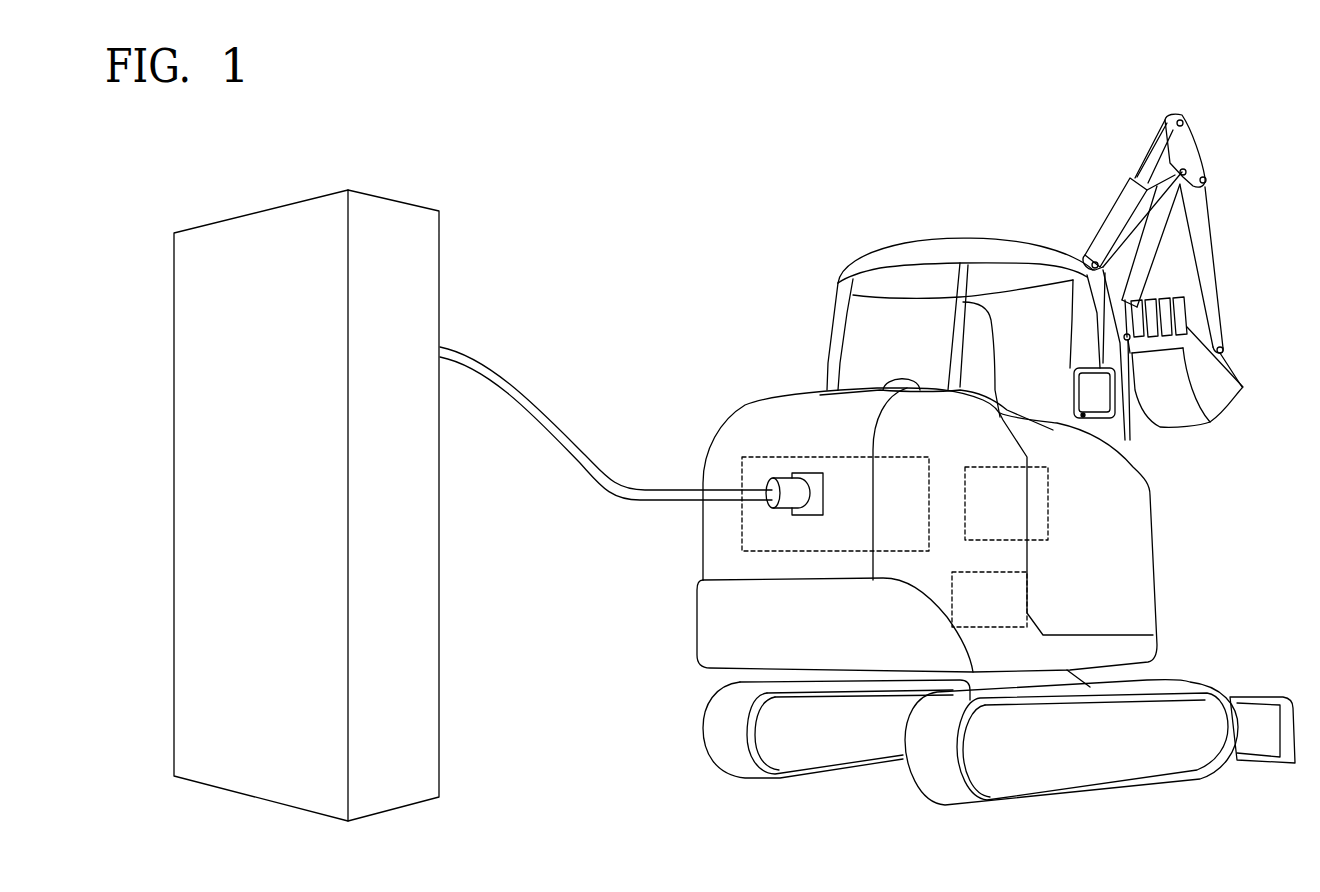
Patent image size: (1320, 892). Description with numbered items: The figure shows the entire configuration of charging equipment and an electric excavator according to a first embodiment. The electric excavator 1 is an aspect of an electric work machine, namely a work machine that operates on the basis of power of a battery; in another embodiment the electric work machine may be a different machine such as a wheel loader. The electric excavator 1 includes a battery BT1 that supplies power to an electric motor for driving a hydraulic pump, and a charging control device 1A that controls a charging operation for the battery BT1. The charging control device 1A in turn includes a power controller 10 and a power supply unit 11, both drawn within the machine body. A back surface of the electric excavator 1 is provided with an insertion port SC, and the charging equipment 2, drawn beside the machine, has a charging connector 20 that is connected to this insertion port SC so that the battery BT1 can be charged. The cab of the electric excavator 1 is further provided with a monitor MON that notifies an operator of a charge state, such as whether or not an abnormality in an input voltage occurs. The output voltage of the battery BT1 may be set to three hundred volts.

The electric excavator 1 is at (962, 190).
The charging control device 1A is at (1106, 547).
The charging equipment 2 is at (268, 211).
The power controller 10 is at (990, 572).
The power supply unit 11 is at (1048, 498).
The charging connector 20 is at (784, 478).
The insertion port SC is at (808, 473).
The battery BT1 is at (742, 527).
The monitor MON is at (1117, 412).